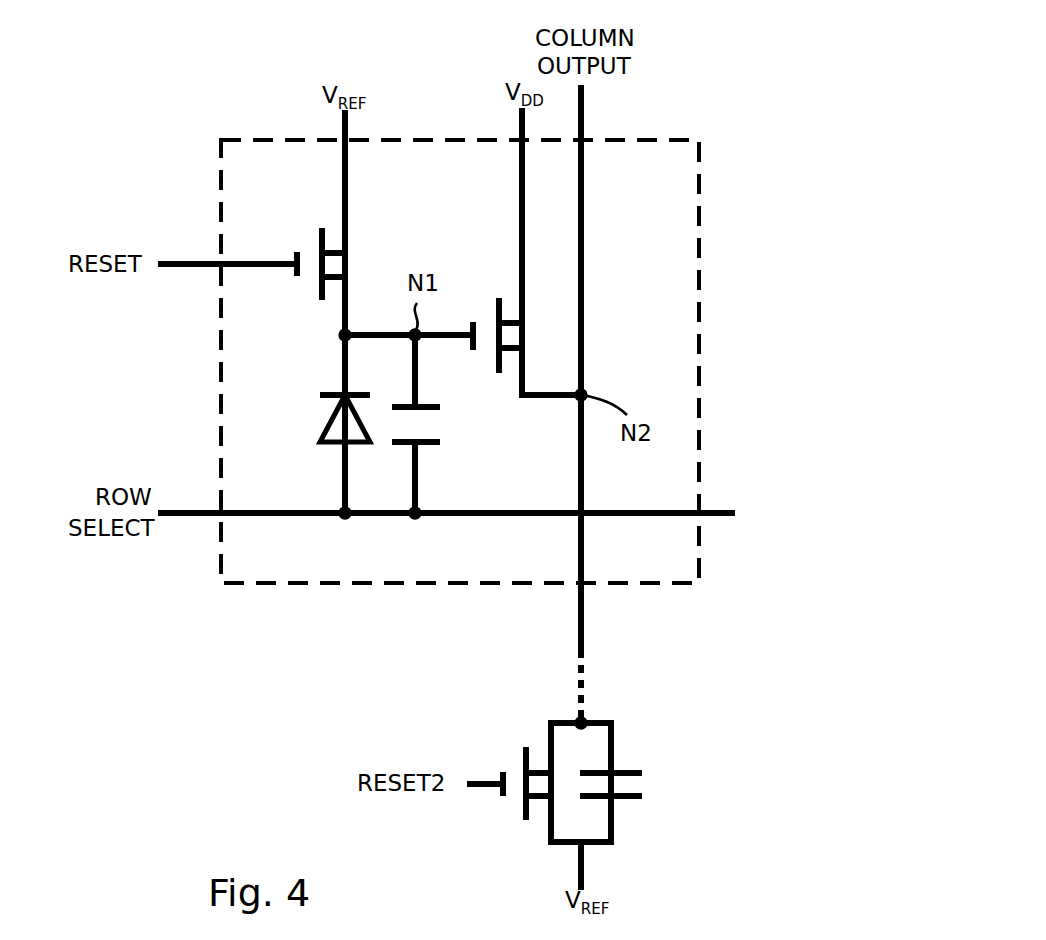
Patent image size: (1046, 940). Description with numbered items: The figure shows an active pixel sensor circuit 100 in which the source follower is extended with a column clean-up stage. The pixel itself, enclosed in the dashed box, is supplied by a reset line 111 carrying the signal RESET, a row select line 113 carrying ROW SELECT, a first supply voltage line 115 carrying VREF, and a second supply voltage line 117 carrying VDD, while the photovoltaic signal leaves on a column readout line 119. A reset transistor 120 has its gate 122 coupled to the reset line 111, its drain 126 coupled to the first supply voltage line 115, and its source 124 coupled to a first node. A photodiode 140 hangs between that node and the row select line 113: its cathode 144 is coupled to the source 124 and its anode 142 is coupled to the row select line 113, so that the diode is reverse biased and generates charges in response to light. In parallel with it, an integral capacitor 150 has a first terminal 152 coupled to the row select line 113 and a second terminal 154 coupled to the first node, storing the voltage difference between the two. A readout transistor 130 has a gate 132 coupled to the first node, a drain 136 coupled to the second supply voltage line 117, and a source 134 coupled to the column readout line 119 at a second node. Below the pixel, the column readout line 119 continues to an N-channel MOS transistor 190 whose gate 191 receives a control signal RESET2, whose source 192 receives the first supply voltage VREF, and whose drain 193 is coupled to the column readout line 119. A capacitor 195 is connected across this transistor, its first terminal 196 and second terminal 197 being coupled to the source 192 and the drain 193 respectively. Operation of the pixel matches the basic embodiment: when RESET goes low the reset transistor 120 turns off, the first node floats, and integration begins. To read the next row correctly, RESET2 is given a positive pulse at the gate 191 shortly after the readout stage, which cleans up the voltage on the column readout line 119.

The active pixel sensor circuit 100 is at (172, 203).
The reset line 111 is at (222, 300).
The row select line 113 is at (441, 480).
The first supply voltage line 115 is at (340, 123).
The second supply voltage line 117 is at (518, 123).
The column readout line 119 is at (578, 593).
The reset transistor 120 is at (326, 248).
The gate 122 is at (274, 270).
The source 124 is at (347, 301).
The drain 126 is at (347, 228).
The readout transistor 130 is at (550, 312).
The gate 132 is at (465, 332).
The source 134 is at (525, 370).
The drain 136 is at (525, 299).
The photodiode 140 is at (304, 424).
The anode 142 is at (343, 460).
The cathode 144 is at (343, 369).
The integral capacitor 150 is at (456, 446).
The first terminal 152 is at (417, 465).
The second terminal 154 is at (417, 382).
The N-channel MOS transistor 190 is at (512, 785).
The gate 191 is at (478, 787).
The source 192 is at (548, 823).
The drain 193 is at (548, 738).
The capacitor 195 is at (636, 772).
The first terminal 196 is at (613, 817).
The second terminal 197 is at (613, 745).